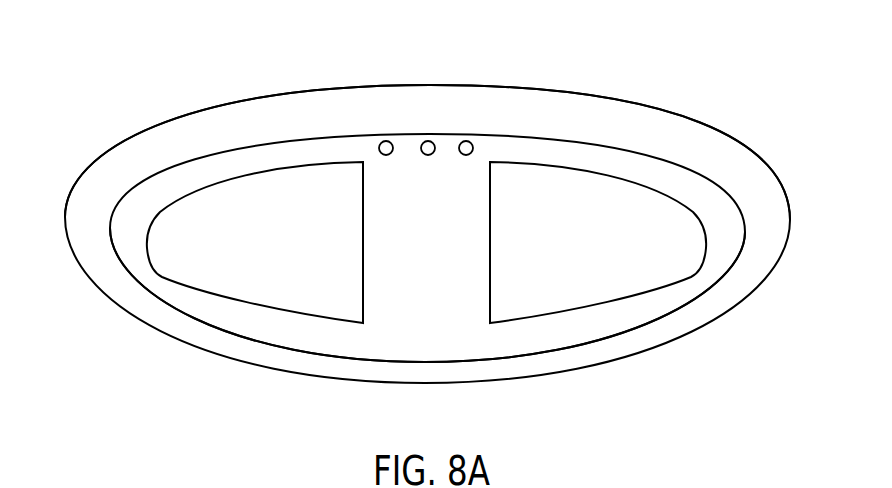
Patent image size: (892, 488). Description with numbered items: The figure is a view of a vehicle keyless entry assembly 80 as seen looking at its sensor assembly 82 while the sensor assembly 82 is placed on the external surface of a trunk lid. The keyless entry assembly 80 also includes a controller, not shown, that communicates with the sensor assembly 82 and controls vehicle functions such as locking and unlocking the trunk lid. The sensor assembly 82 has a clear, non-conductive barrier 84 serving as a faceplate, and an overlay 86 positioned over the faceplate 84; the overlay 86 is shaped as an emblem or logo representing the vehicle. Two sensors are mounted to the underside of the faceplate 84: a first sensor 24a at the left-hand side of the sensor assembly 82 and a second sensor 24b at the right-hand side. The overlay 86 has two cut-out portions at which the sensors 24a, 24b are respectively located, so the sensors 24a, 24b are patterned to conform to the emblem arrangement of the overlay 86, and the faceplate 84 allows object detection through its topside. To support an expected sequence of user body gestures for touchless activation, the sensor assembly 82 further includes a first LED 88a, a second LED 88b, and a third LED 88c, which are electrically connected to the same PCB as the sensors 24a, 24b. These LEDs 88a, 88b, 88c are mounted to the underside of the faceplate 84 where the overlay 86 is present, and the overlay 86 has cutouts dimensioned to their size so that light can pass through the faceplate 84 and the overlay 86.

The keyless entry assembly 80 is at (708, 60).
The sensor assembly 82 is at (133, 132).
The non-conductive barrier 84 is at (685, 135).
The overlay 86 is at (328, 343).
The first sensor 24a is at (263, 251).
The second sensor 24b is at (576, 251).
The first LED 88a is at (385, 140).
The second LED 88b is at (426, 140).
The third LED 88c is at (464, 140).